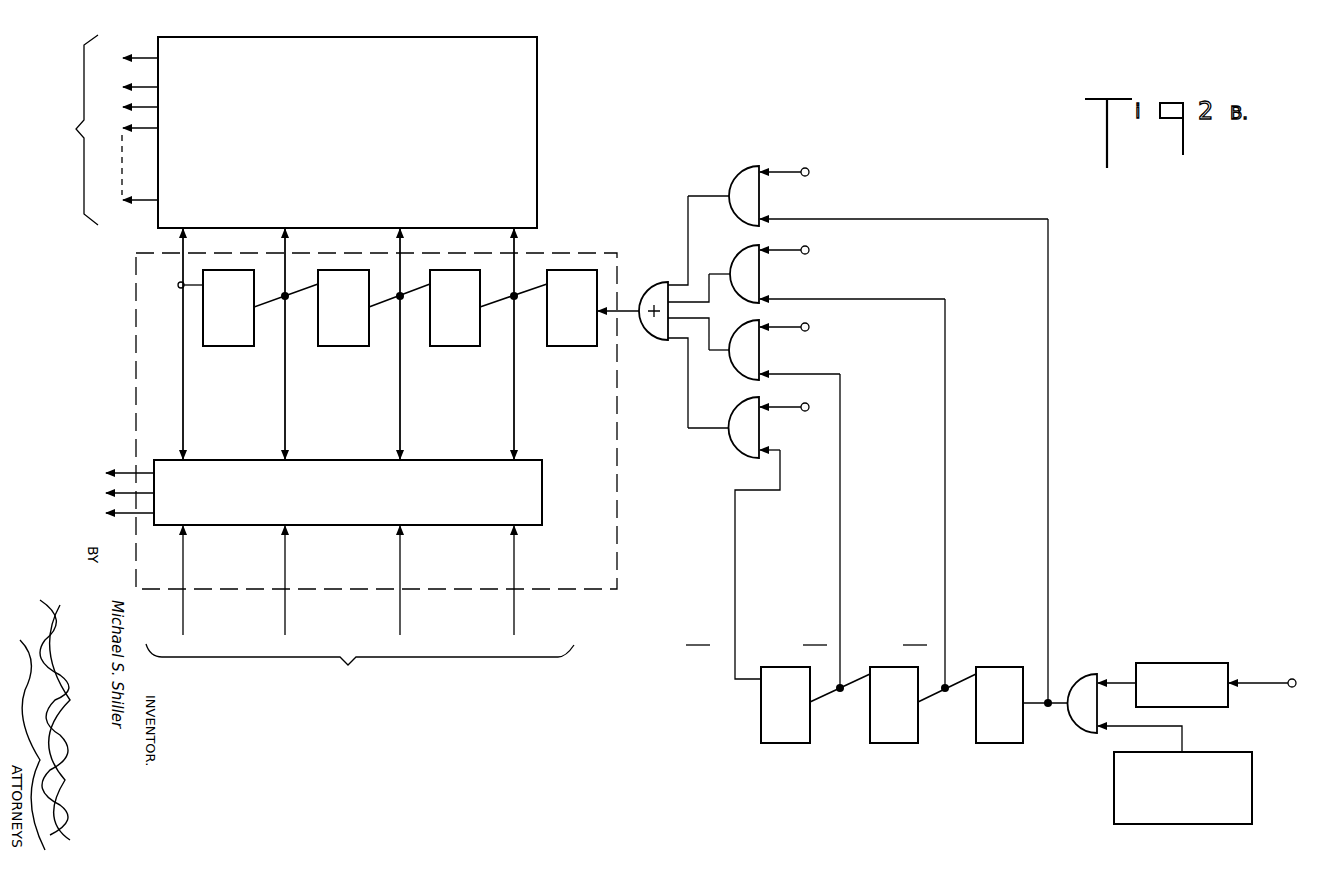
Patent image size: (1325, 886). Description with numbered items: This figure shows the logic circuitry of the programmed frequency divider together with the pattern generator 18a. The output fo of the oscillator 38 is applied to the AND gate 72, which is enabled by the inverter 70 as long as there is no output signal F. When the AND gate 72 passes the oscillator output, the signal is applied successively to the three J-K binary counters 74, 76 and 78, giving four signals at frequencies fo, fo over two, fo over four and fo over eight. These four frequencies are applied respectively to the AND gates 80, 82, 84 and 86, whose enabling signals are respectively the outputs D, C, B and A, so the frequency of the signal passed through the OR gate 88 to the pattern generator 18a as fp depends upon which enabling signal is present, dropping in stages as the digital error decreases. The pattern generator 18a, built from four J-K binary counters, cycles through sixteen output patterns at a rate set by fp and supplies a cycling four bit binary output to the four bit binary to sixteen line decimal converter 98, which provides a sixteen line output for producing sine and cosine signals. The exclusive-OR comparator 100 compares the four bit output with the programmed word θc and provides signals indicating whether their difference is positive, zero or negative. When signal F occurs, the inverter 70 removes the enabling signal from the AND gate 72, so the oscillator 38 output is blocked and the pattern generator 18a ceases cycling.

The four bit binary to sixteen line decimal converter 98 is at (527, 89).
The pattern generator 18a is at (138, 336).
The exclusive-OR comparator 100 is at (532, 514).
The OR gate 88 is at (652, 281).
The AND gate 80 is at (742, 181).
The AND gate 82 is at (746, 258).
The AND gate 84 is at (750, 363).
The AND gate 86 is at (745, 441).
The J-K binary counter 78 is at (790, 737).
The J-K binary counter 76 is at (893, 737).
The J-K binary counter 74 is at (1005, 735).
The AND gate 72 is at (1087, 672).
The inverter 70 is at (1215, 663).
The oscillator 38 is at (1252, 768).